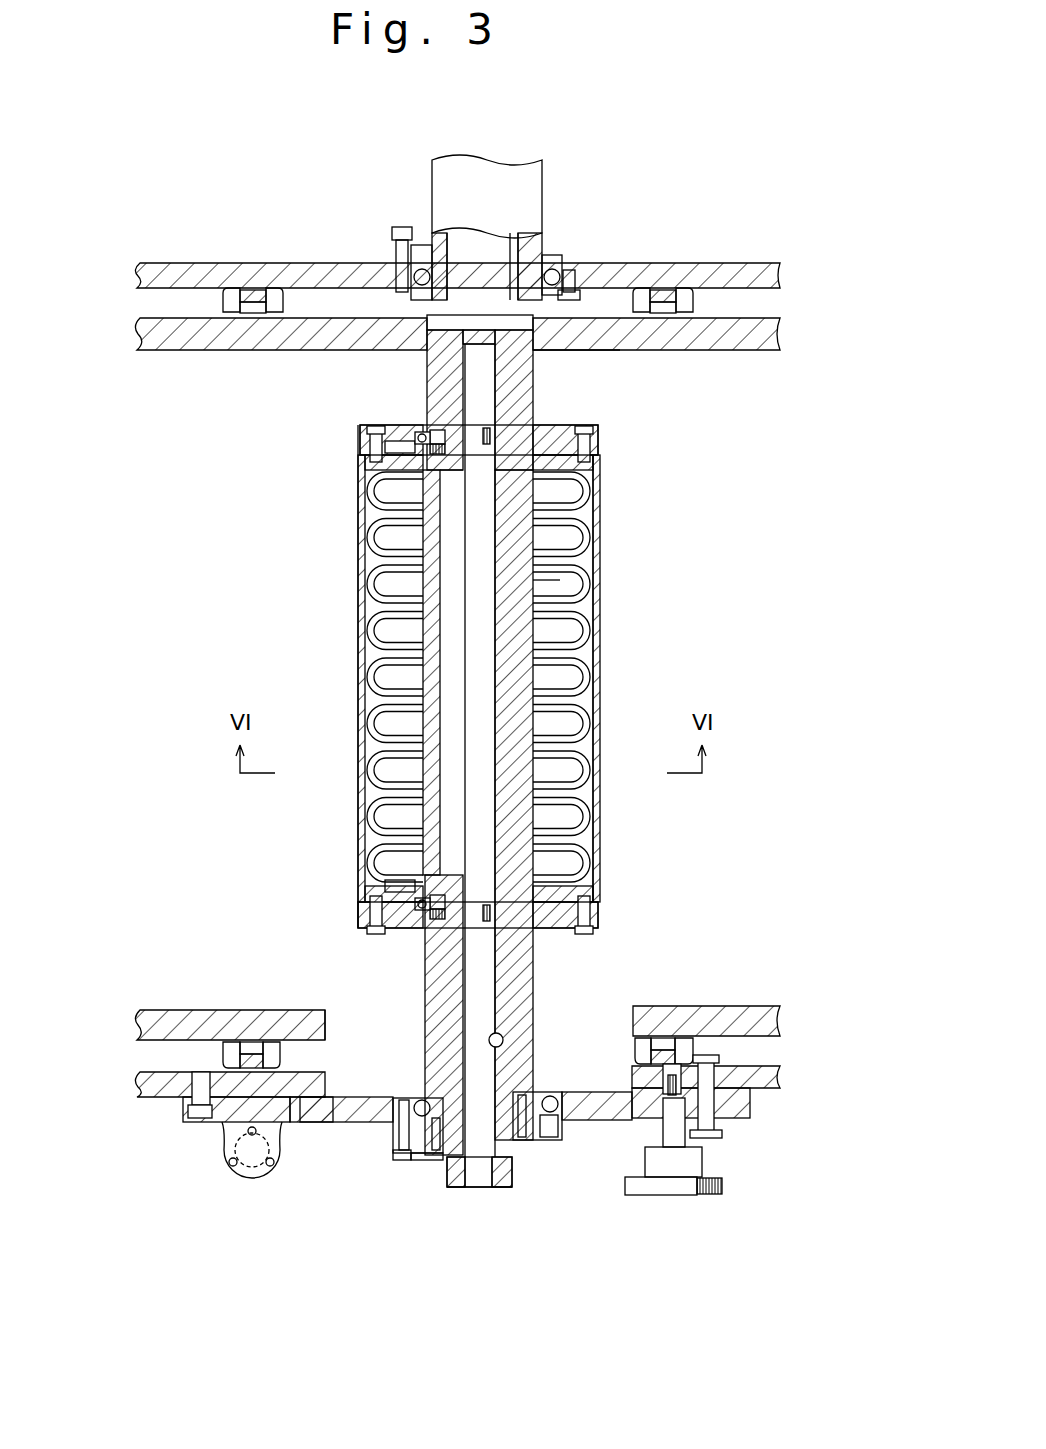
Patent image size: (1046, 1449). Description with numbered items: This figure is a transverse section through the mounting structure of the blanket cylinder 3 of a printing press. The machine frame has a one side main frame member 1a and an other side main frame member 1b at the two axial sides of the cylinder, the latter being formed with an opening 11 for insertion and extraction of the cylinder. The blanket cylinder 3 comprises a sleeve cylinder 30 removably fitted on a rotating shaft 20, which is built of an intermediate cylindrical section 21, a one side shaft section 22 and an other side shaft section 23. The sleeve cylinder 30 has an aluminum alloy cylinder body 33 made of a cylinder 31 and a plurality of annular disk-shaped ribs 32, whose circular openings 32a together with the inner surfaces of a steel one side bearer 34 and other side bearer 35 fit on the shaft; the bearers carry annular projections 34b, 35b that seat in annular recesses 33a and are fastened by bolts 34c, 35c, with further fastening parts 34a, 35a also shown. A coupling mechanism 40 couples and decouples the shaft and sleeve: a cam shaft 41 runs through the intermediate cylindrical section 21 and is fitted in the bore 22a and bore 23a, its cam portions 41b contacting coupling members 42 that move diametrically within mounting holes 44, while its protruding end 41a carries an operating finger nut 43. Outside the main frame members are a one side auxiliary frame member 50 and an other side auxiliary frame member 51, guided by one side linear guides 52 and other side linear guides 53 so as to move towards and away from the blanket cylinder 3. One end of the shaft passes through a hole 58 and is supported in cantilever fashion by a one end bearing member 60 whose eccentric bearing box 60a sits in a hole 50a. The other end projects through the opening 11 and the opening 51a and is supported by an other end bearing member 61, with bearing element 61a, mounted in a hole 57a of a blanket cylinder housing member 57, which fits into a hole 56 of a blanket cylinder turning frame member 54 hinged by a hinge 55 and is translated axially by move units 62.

The one side main frame member 1a is at (728, 342).
The other side main frame member 1b is at (190, 1012).
The blanket cylinder 3 is at (356, 633).
The opening 11 is at (315, 1012).
The rotating shaft 20 is at (430, 672).
The intermediate cylindrical section 21 is at (416, 718).
The one side shaft section 22 is at (430, 378).
The bore 22a is at (512, 360).
The other side shaft section 23 is at (440, 1018).
The bore 23a is at (507, 1038).
The sleeve cylinder 30 is at (600, 692).
The cylinder 31 is at (596, 652).
The annular disk-shaped ribs 32 is at (560, 600).
The circular openings 32a is at (592, 592).
The cylinder body 33 is at (718, 567).
The annular recesses 33a is at (412, 490).
The one side bearer 34 is at (600, 440).
The upper flange bolt 34a is at (592, 462).
The annular projection 34b is at (385, 462).
The bolts 34c is at (372, 447).
The other side bearer 35 is at (600, 910).
The lower flange bolt 35a is at (548, 930).
The annular projection 35b is at (420, 902).
The bolts 35c is at (370, 915).
The coupling mechanism 40 is at (505, 1190).
The cam shaft 41 is at (490, 810).
The protruding end 41a is at (480, 1190).
The cam portions 41b is at (582, 470).
The coupling member 42 is at (420, 452).
The operating finger nut 43 is at (455, 1188).
The mounting holes 44 is at (462, 432).
The one side auxiliary frame member 50 is at (722, 265).
The hole 50a is at (546, 268).
The other side auxiliary frame member 51 is at (158, 1090).
The opening 51a is at (352, 1122).
The one side linear guides 52 is at (242, 300).
The other side linear guides 53 is at (245, 1045).
The blanket cylinder turning frame member 54 is at (720, 1120).
The hinge 55 is at (248, 1165).
The hole 56 is at (300, 1128).
The blanket cylinder housing member 57 is at (345, 1100).
The hole 57a is at (416, 1100).
The hole 58 is at (607, 348).
The one end bearing member 60 is at (443, 185).
The bearing box 60a is at (552, 240).
The other end bearing member 61 is at (418, 1160).
The lower bearing 61a is at (540, 1140).
The move units 62 is at (652, 1196).